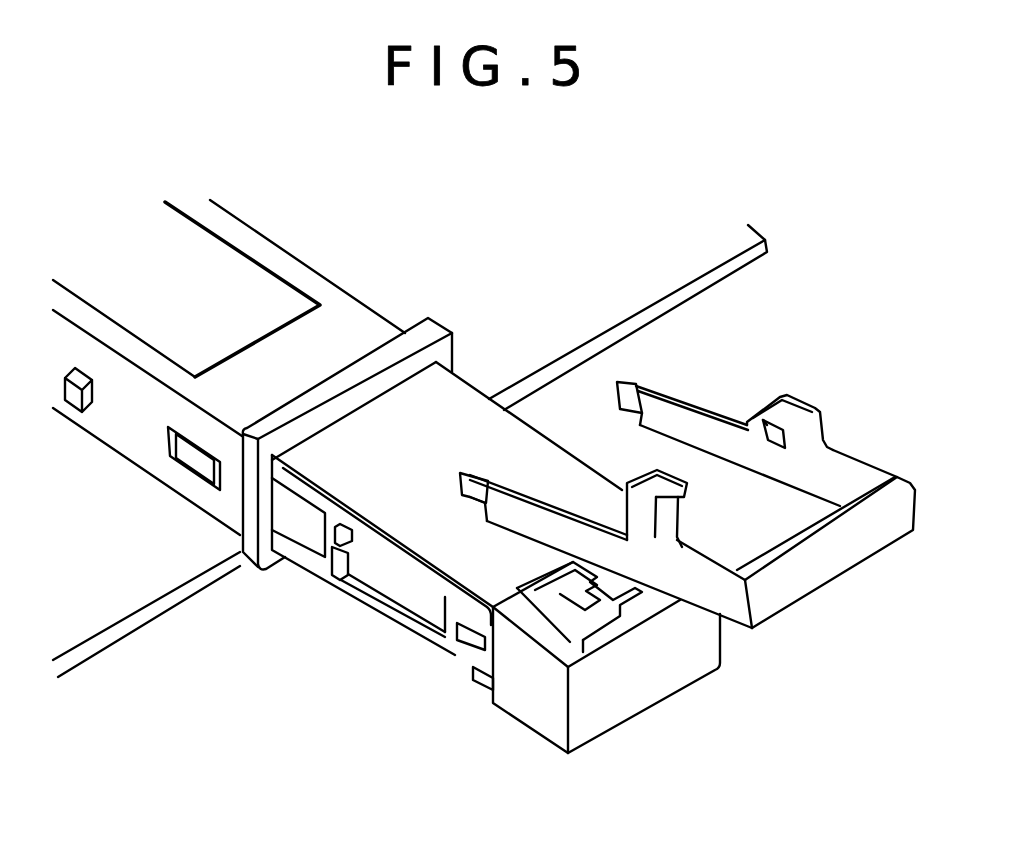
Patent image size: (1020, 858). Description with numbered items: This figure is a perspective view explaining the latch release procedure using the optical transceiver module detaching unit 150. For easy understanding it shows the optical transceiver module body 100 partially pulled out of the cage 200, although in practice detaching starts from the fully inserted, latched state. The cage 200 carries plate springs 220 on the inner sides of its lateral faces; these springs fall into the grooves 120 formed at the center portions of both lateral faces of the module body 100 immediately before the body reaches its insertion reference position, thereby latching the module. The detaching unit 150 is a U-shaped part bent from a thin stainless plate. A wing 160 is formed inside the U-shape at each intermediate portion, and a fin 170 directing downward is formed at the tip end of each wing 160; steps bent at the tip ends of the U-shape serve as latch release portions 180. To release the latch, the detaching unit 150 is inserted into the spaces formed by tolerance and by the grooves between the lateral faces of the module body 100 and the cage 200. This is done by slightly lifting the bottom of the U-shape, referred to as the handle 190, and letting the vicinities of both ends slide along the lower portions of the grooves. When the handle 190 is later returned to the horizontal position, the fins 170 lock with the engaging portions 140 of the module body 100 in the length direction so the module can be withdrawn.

The optical transceiver module body 100 is at (463, 400).
The groove 120 is at (377, 595).
The engaging portion 140 is at (568, 610).
The optical transceiver module detaching unit 150 is at (896, 411).
The wing 160 is at (677, 547).
The fin 170 is at (758, 432).
The latch release portion 180 is at (632, 397).
The handle 190 is at (853, 545).
The cage 200 is at (348, 340).
The plate spring 220 is at (200, 462).